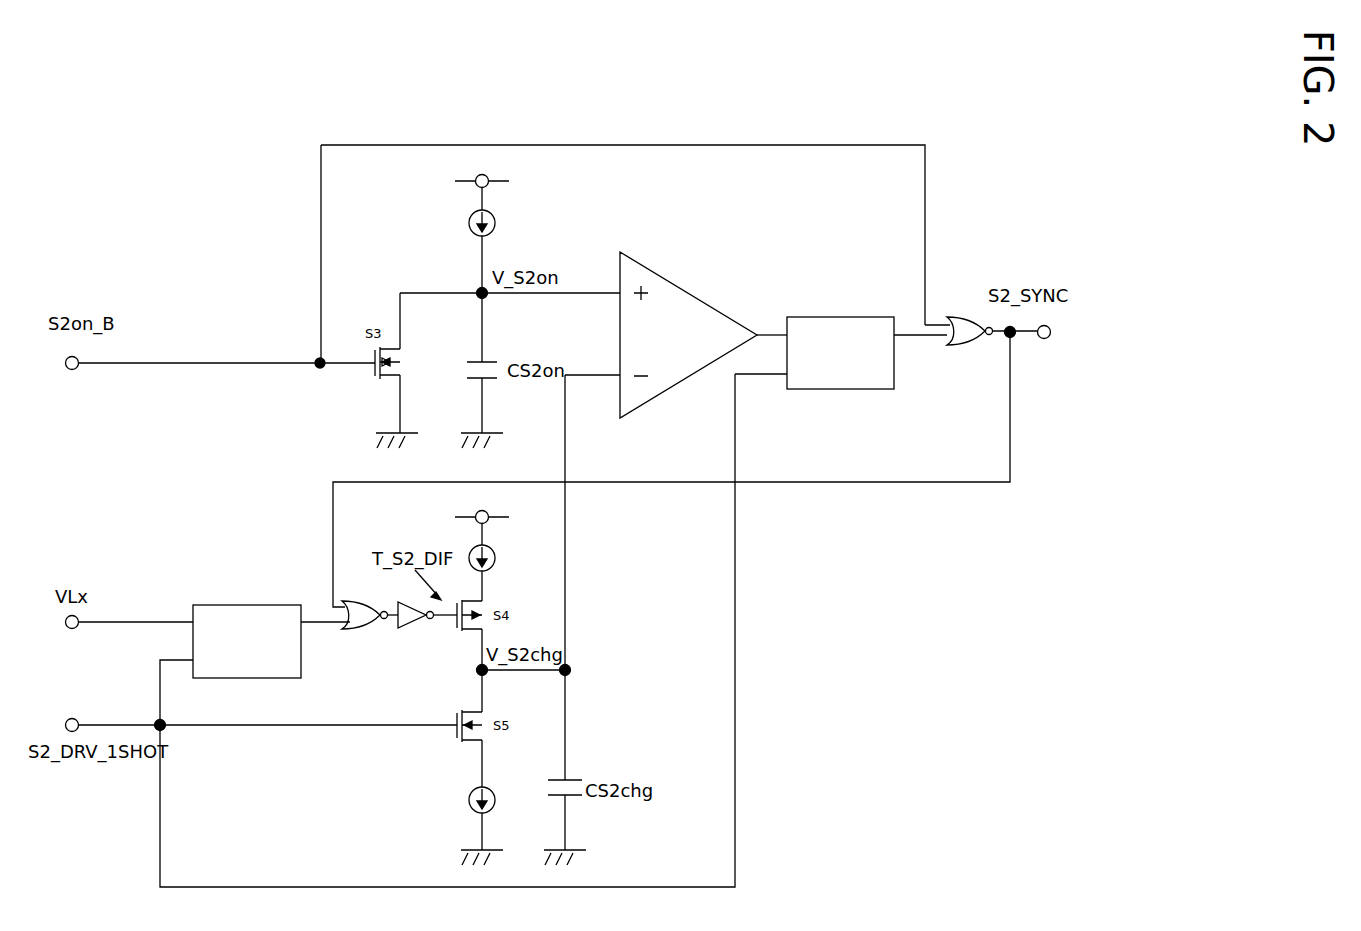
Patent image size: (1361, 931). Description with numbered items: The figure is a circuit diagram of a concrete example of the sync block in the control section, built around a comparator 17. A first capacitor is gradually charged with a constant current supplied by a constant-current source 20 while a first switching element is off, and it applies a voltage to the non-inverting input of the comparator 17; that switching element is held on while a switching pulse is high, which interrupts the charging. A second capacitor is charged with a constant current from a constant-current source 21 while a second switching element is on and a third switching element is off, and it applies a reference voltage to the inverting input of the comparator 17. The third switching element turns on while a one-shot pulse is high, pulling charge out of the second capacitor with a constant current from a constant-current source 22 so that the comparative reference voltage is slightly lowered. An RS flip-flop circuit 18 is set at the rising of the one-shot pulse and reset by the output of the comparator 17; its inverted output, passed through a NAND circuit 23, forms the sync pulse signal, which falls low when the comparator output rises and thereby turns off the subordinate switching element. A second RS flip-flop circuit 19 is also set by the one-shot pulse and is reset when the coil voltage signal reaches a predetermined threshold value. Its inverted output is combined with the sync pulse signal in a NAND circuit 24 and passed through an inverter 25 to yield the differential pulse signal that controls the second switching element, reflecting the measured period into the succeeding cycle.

The comparator 17 is at (703, 313).
The RS flip-flop circuit 18 is at (835, 320).
The RS flip-flop circuit 19 is at (238, 615).
The constant-current source 20 is at (468, 224).
The constant-current source 21 is at (490, 551).
The constant-current source 22 is at (468, 806).
The NAND circuit 23 is at (959, 320).
The NAND circuit 24 is at (360, 630).
The inverter 25 is at (408, 630).